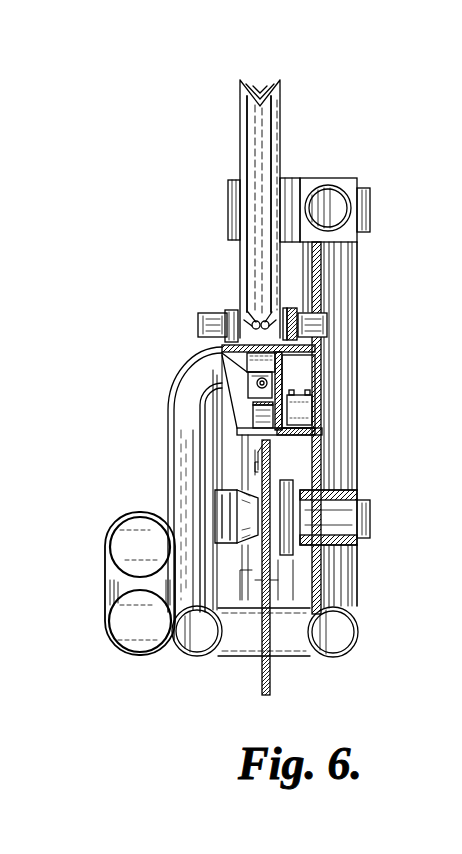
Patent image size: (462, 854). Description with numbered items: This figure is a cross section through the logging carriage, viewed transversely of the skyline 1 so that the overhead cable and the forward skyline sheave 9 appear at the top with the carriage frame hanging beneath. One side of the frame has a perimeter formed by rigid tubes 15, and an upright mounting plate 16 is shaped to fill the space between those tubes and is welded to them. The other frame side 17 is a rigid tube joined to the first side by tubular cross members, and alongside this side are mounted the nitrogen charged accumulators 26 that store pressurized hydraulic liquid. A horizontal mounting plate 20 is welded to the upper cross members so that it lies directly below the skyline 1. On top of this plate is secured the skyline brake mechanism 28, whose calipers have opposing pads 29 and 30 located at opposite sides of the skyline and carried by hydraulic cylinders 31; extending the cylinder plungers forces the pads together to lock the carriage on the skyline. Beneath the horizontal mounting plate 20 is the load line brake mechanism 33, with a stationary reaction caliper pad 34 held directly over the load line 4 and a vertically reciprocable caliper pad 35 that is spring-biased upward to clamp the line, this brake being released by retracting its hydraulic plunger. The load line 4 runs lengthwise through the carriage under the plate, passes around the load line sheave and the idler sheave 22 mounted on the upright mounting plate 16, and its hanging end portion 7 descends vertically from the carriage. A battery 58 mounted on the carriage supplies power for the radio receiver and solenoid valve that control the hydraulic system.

The skyline 1 is at (225, 365).
The load line 4 is at (268, 390).
The hanging end portion 7 is at (274, 684).
The skyline sheave 9 is at (270, 135).
The rigid tubes 15 is at (345, 182).
The upright mounting plate 16 is at (320, 462).
The frame side 17 is at (185, 461).
The horizontal mounting plate 20 is at (312, 358).
The idler sheave 22 is at (275, 590).
The accumulators 26 is at (125, 625).
The skyline brake mechanism 28 is at (284, 304).
The caliper pad 29 is at (248, 317).
The caliper pad 30 is at (298, 304).
The hydraulic cylinders 31 is at (210, 318).
The load line brake mechanism 33 is at (240, 380).
The stationary reaction caliper pad 34 is at (272, 380).
The vertically reciprocable caliper pad 35 is at (274, 392).
The battery 58 is at (305, 416).